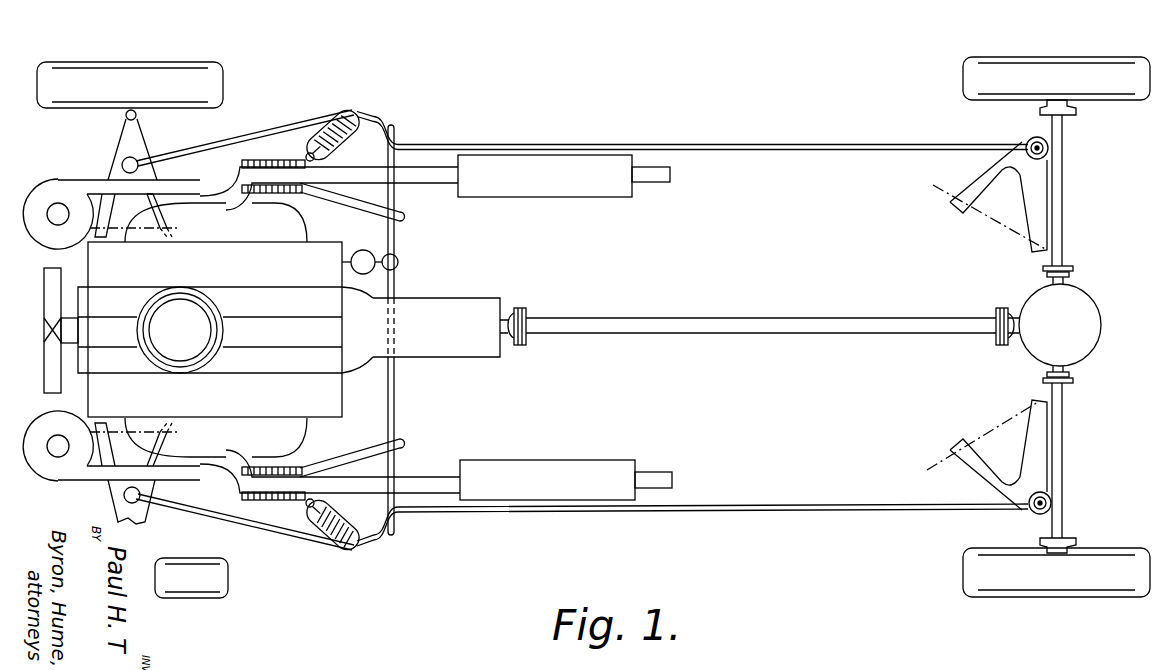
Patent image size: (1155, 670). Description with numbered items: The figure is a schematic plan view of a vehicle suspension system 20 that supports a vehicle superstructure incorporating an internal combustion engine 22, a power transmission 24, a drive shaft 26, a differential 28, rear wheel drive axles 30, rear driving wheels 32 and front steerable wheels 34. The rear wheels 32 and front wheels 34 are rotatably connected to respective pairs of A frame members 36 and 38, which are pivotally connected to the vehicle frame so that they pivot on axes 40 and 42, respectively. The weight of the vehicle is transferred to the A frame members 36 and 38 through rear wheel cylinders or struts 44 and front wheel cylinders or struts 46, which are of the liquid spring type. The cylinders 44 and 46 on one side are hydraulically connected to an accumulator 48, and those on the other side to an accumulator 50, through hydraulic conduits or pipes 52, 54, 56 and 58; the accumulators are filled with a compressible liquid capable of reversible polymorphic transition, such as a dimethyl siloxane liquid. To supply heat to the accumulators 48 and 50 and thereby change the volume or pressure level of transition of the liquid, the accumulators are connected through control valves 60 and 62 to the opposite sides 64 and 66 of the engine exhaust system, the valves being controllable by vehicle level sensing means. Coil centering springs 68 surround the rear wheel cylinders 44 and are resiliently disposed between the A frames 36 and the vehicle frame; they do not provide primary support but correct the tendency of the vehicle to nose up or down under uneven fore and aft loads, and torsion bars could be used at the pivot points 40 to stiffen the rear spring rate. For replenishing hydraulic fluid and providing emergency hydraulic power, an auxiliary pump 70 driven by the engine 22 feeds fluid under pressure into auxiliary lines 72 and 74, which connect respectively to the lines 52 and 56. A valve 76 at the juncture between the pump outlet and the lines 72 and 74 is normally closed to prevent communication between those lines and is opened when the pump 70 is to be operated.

The vehicle suspension system 20 is at (742, 57).
The internal combustion engine 22 is at (360, 390).
The power transmission 24 is at (460, 312).
The drive shaft 26 is at (735, 320).
The differential 28 is at (1035, 342).
The rear wheel drive axles 30 is at (1064, 247).
The rear driving wheels 32 is at (1112, 70).
The front steerable wheels 34 is at (106, 72).
The A frame members 36 is at (988, 174).
The A frame members 38 is at (124, 124).
The pivot axes 40 is at (1008, 232).
The pivot axes 42 is at (176, 222).
The rear wheel cylinders or struts 44 is at (1050, 148).
The front wheel cylinders or struts 46 is at (121, 160).
The accumulator 48 is at (340, 110).
The accumulator 50 is at (336, 548).
The hydraulic conduit or pipe 52 is at (734, 144).
The hydraulic conduit or pipe 54 is at (262, 160).
The hydraulic conduit or pipe 56 is at (752, 510).
The hydraulic conduit or pipe 58 is at (262, 500).
The control valve 60 is at (307, 150).
The control valve 62 is at (307, 512).
The engine exhaust system side 64 is at (246, 132).
The engine exhaust system side 66 is at (230, 515).
The coil centering springs 68 is at (1024, 142).
The auxiliary pump 70 is at (370, 250).
The auxiliary line 72 is at (397, 232).
The auxiliary line 74 is at (397, 416).
The valve 76 is at (400, 262).